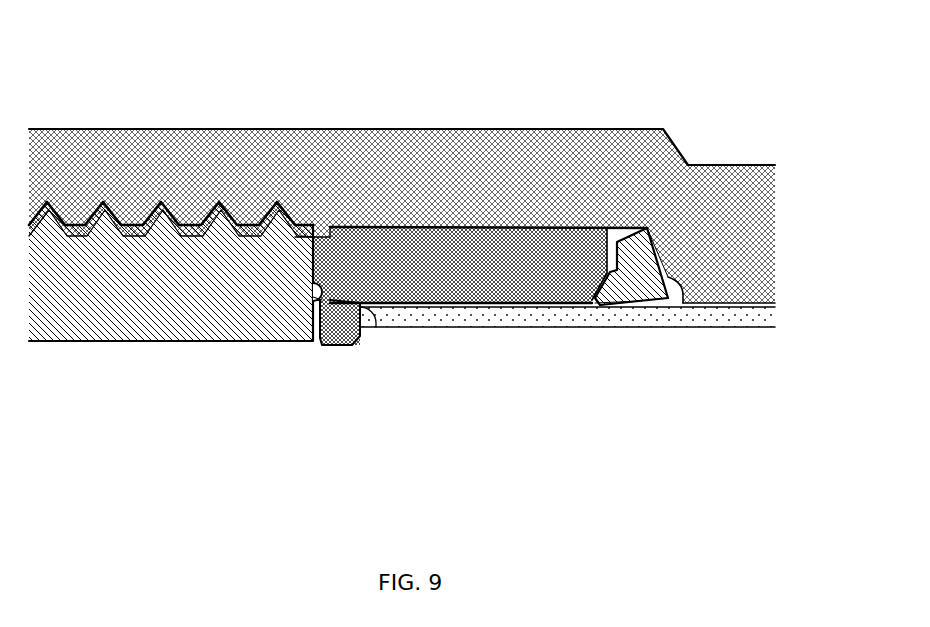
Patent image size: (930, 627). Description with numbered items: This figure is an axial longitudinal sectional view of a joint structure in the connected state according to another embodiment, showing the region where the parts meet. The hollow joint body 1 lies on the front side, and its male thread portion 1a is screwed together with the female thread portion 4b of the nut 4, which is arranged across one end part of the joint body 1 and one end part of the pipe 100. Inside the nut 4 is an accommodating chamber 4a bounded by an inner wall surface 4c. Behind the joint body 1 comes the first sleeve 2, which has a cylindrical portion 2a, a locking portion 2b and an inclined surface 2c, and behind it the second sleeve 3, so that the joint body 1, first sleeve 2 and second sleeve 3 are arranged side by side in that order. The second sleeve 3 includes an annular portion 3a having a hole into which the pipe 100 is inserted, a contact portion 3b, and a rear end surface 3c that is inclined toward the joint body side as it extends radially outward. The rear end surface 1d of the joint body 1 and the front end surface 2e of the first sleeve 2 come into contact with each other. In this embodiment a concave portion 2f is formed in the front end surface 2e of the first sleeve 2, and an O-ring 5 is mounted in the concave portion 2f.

The joint body 1 is at (47, 293).
The male thread portion 1a is at (147, 213).
The rear end surface 1d is at (347, 343).
The first sleeve 2 is at (540, 90).
The cylindrical portion 2a is at (455, 237).
The locking portion 2b is at (313, 280).
The inclined surface 2c is at (630, 230).
The front end surface 2e is at (312, 290).
The concave portion 2f is at (313, 298).
The second sleeve 3 is at (705, 413).
The annular portion 3a is at (611, 303).
The contact portion 3b is at (578, 297).
The rear end surface 3c is at (683, 292).
The nut 4 is at (237, 150).
The accommodating chamber 4a is at (625, 235).
The female thread portion 4b is at (230, 220).
The inner wall surface 4c is at (643, 227).
The O-ring 5 is at (367, 303).
The pipe 100 is at (727, 322).